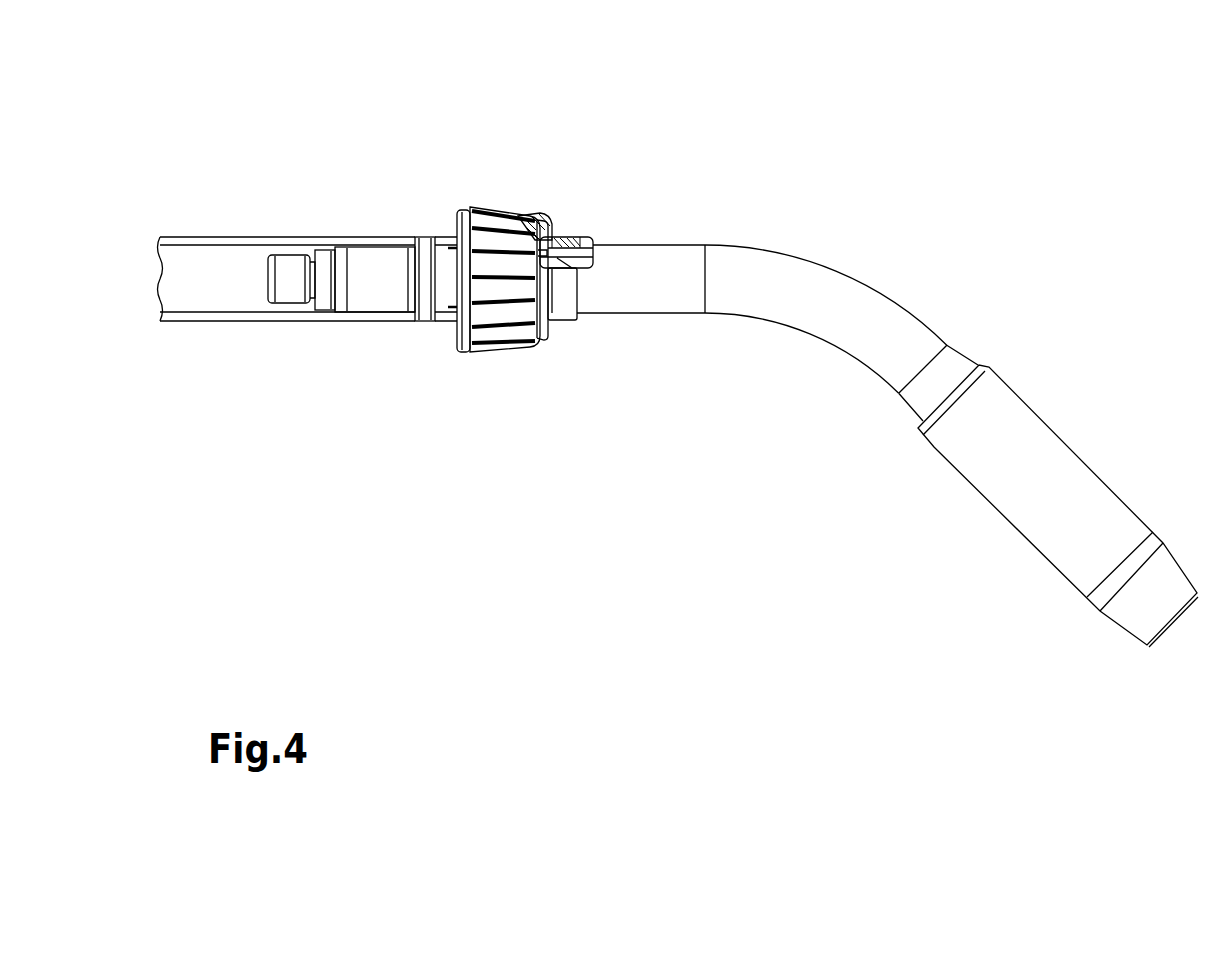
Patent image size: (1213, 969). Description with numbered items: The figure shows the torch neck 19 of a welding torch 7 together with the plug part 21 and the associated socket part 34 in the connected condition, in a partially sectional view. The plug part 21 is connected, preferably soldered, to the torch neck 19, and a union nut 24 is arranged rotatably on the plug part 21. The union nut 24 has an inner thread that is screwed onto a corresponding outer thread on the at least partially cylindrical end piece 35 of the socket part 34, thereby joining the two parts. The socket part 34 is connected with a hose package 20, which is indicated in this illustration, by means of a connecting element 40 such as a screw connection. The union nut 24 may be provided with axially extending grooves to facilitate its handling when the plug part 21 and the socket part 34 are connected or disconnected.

The welding torch 7 is at (1047, 183).
The torch neck 19 is at (772, 282).
The hose package 20 is at (227, 268).
The plug part 21 is at (550, 175).
The union nut 24 is at (497, 264).
The socket part 34 is at (373, 198).
The end piece 35 is at (440, 310).
The connecting element 40 is at (278, 313).